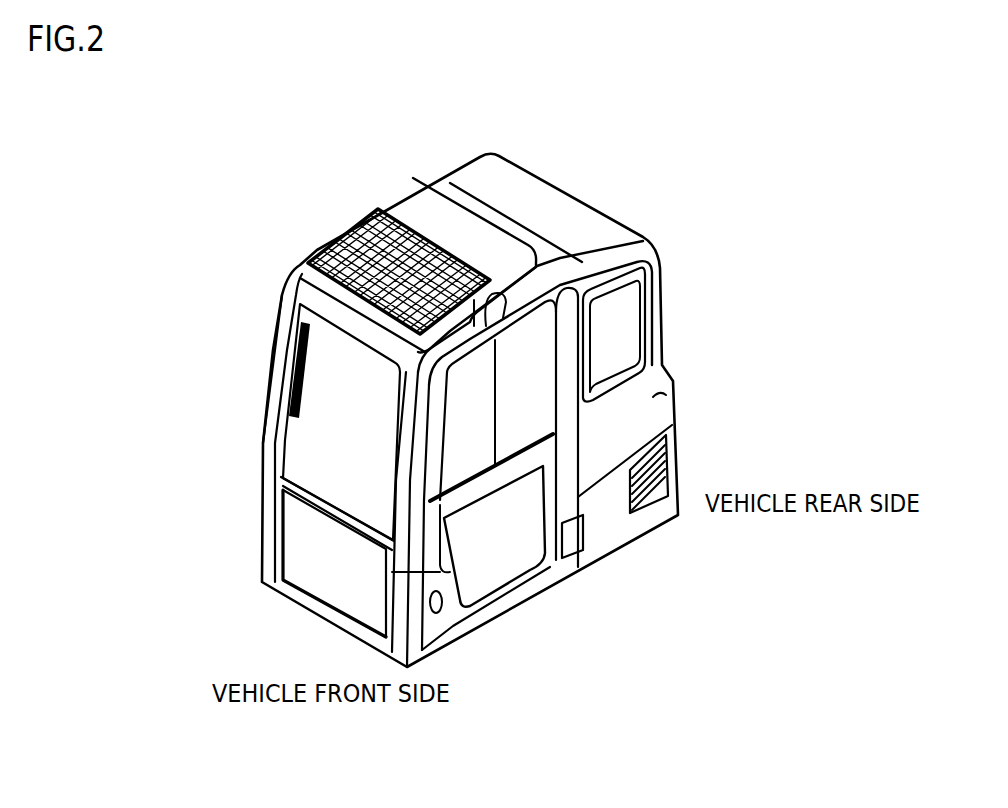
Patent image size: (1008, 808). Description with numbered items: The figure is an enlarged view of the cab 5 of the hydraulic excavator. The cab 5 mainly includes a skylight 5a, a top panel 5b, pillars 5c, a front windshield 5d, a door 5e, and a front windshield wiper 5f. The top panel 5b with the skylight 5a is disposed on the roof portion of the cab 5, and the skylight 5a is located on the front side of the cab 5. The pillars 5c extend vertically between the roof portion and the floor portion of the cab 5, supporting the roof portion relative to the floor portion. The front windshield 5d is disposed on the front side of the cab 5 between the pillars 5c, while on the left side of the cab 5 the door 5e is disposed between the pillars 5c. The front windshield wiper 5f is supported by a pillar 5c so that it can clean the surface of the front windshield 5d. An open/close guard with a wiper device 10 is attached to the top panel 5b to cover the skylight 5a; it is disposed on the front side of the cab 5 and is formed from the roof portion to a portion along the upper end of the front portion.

The cab 5 is at (578, 177).
The skylight 5a is at (350, 228).
The top panel 5b is at (498, 220).
The pillars 5c is at (403, 497).
The front windshield 5d is at (337, 470).
The door 5e is at (487, 483).
The front windshield wiper 5f is at (262, 433).
The open/close guard with a wiper device 10 is at (408, 205).